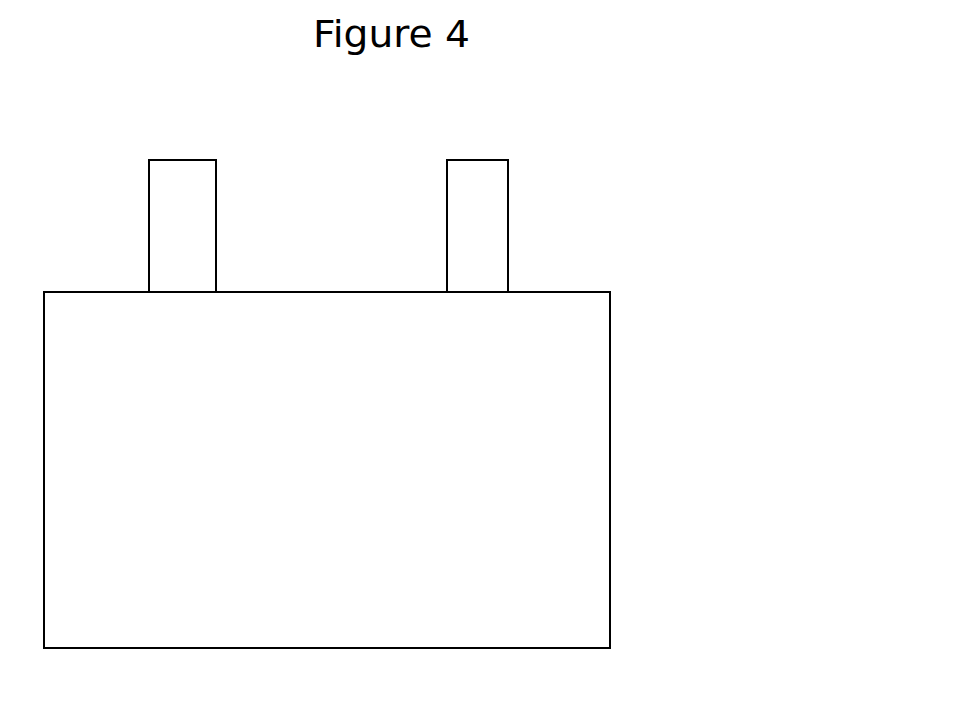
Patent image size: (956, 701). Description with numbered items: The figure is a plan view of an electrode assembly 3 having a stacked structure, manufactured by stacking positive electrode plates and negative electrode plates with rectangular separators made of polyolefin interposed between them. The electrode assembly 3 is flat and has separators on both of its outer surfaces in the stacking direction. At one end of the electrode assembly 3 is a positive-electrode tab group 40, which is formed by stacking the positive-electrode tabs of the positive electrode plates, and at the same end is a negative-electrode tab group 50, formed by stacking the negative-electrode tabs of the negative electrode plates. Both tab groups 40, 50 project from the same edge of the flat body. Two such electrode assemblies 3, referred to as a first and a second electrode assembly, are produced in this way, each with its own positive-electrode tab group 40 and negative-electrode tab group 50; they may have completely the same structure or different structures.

The electrode assembly 3 is at (642, 422).
The positive-electrode tab group 40 is at (482, 193).
The negative-electrode tab group 50 is at (187, 190).